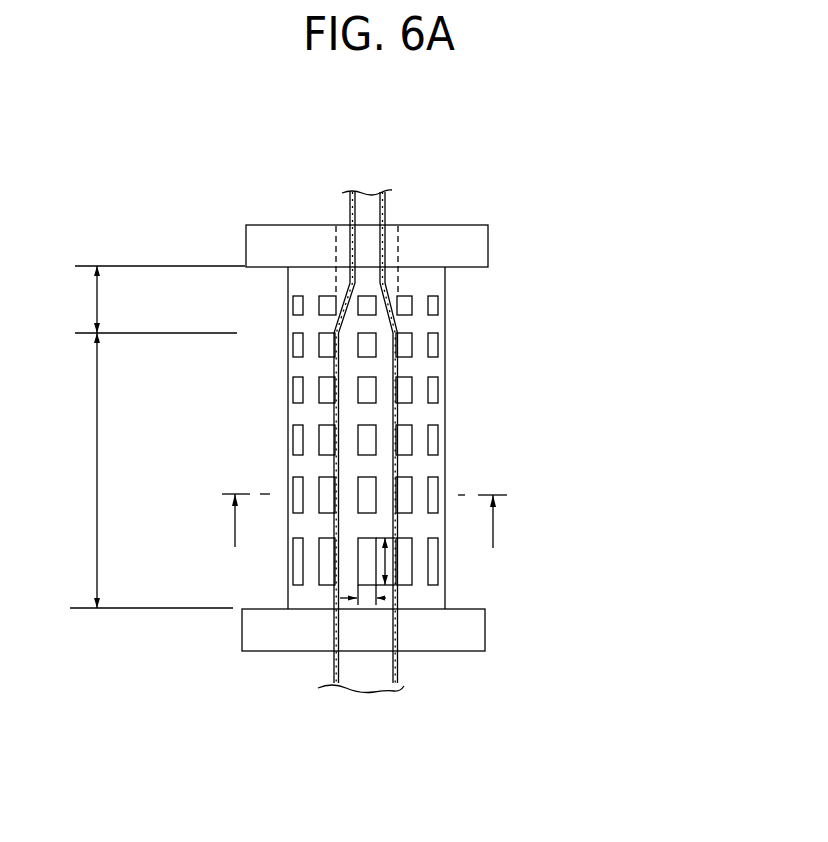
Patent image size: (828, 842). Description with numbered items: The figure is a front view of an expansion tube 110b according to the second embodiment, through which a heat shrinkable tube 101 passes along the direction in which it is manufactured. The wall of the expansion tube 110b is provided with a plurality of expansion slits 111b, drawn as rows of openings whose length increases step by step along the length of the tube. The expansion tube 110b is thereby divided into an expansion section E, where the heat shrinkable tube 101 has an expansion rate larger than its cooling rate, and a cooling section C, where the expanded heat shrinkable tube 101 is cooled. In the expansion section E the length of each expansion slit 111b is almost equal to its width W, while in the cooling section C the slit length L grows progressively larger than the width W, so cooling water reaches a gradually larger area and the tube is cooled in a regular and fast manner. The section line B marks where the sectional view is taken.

The heat shrinkable tube 101 is at (387, 203).
The expansion tube 110b is at (683, 233).
The expansion slits 111b is at (432, 388).
The expansion section E is at (157, 299).
The cooling section C is at (150, 470).
The line B— B is at (365, 526).
The width of expansion slit W is at (368, 600).
The opening length dimension L is at (396, 585).